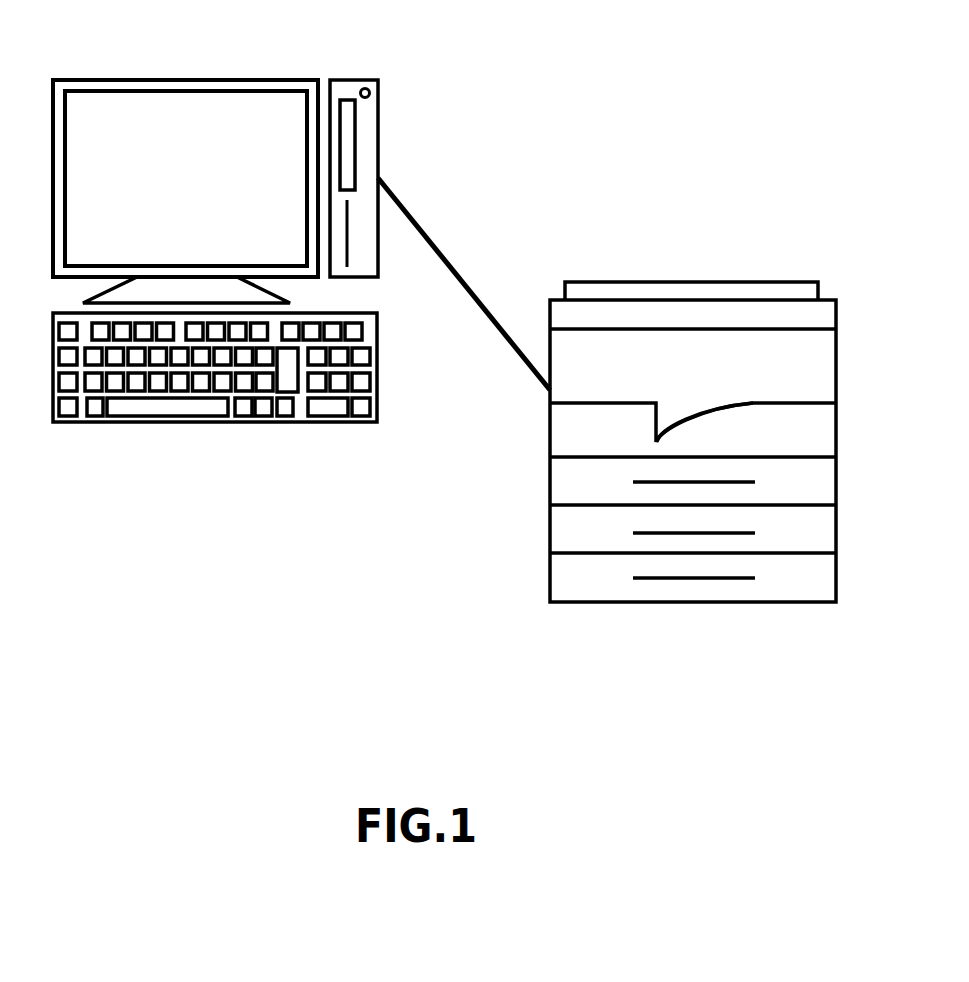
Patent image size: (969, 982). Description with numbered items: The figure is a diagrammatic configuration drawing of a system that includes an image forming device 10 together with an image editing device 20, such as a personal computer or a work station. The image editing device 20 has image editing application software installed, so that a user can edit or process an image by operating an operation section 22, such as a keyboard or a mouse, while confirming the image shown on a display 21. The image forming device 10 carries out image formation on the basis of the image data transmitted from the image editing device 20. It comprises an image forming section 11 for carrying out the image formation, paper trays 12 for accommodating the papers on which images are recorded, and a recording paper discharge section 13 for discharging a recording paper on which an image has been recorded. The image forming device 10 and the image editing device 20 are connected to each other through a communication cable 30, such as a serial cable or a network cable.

The image forming device 10 is at (650, 622).
The image forming section 11 is at (565, 388).
The paper trays 12 is at (562, 535).
The recording paper discharge section 13 is at (667, 413).
The image editing device 20 is at (388, 75).
The display 21 is at (233, 79).
The operation section 22 is at (187, 423).
The communication cable 30 is at (432, 240).